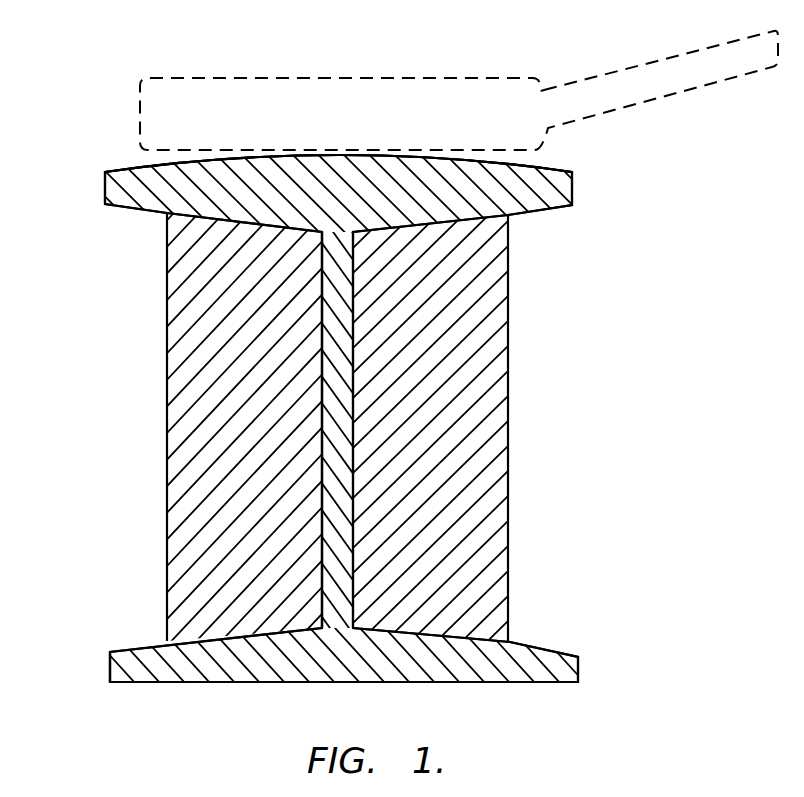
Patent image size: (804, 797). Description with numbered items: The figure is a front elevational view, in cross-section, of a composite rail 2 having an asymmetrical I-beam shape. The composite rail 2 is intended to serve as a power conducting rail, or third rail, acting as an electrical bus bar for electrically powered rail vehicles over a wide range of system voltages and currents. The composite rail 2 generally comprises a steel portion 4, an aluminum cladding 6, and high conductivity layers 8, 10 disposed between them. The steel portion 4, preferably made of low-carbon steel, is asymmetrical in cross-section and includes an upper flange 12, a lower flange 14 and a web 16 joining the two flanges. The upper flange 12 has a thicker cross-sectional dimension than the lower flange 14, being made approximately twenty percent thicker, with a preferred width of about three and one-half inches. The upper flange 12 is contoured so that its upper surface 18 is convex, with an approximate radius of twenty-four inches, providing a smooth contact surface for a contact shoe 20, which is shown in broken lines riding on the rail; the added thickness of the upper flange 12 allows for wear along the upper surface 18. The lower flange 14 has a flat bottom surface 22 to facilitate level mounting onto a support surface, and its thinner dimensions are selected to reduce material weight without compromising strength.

The composite rail 2 is at (690, 383).
The steel portion 4 is at (556, 647).
The aluminum cladding 6 is at (511, 292).
The high conductivity layer 8 is at (358, 342).
The high conductivity layer 10 is at (315, 324).
The upper flange 12 is at (113, 183).
The lower flange 14 is at (132, 666).
The web 16 is at (337, 418).
The upper surface 18 is at (137, 166).
The contact shoe 20 is at (218, 108).
The flat bottom surface 22 is at (482, 683).